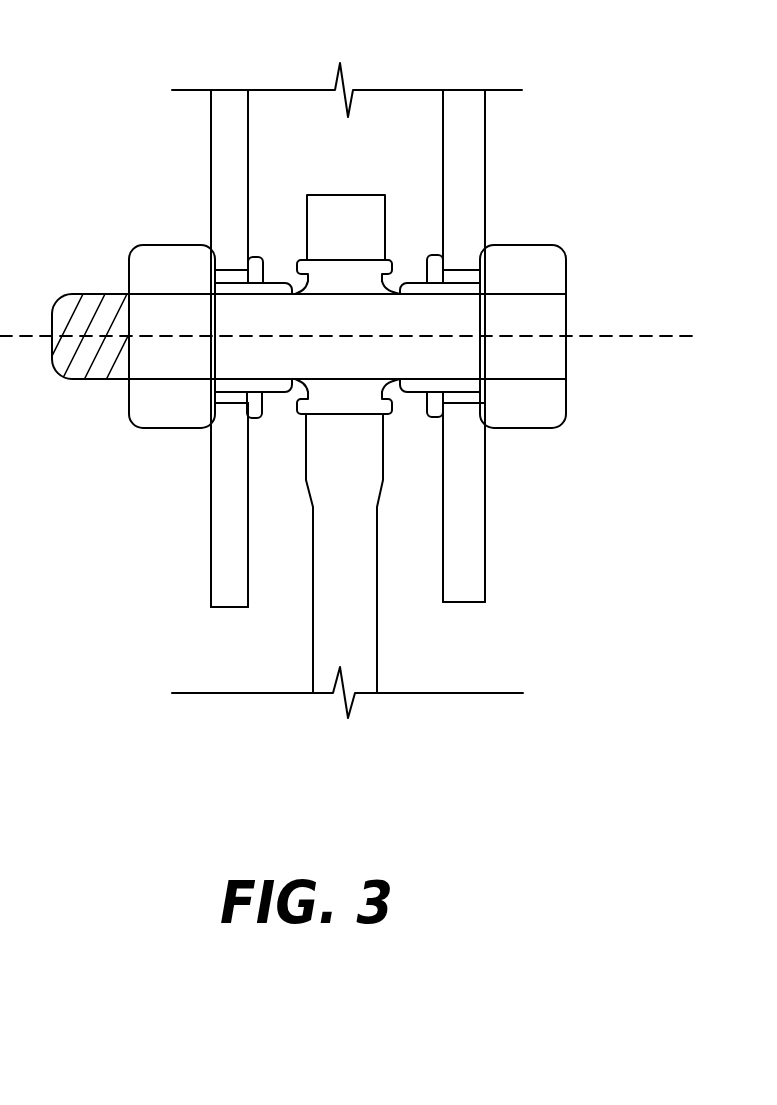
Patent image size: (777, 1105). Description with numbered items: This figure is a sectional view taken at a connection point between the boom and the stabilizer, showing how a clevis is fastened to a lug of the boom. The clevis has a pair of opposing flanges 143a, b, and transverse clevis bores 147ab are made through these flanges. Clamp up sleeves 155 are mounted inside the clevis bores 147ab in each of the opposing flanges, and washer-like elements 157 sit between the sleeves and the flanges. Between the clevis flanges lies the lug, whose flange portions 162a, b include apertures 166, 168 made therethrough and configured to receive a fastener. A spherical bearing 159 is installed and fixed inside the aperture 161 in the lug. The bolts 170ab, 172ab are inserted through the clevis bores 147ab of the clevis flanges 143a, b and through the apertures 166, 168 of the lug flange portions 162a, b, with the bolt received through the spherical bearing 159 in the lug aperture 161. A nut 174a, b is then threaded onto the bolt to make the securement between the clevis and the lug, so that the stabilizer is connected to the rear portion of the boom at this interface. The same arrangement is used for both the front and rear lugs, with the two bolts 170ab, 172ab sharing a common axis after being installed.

The flanges of clevis 143a, b is at (227, 194).
The clevis bores 147ab is at (458, 404).
The clamp up sleeves 155 is at (255, 257).
The washers 157 is at (277, 283).
The spherical bearing 159 is at (367, 280).
The aperture 161 is at (343, 413).
The flange portions of lug 162a, b is at (350, 215).
The apertures 166, 168 is at (323, 262).
The bolts 170ab, 172ab is at (553, 268).
The nut 174a, b is at (148, 265).